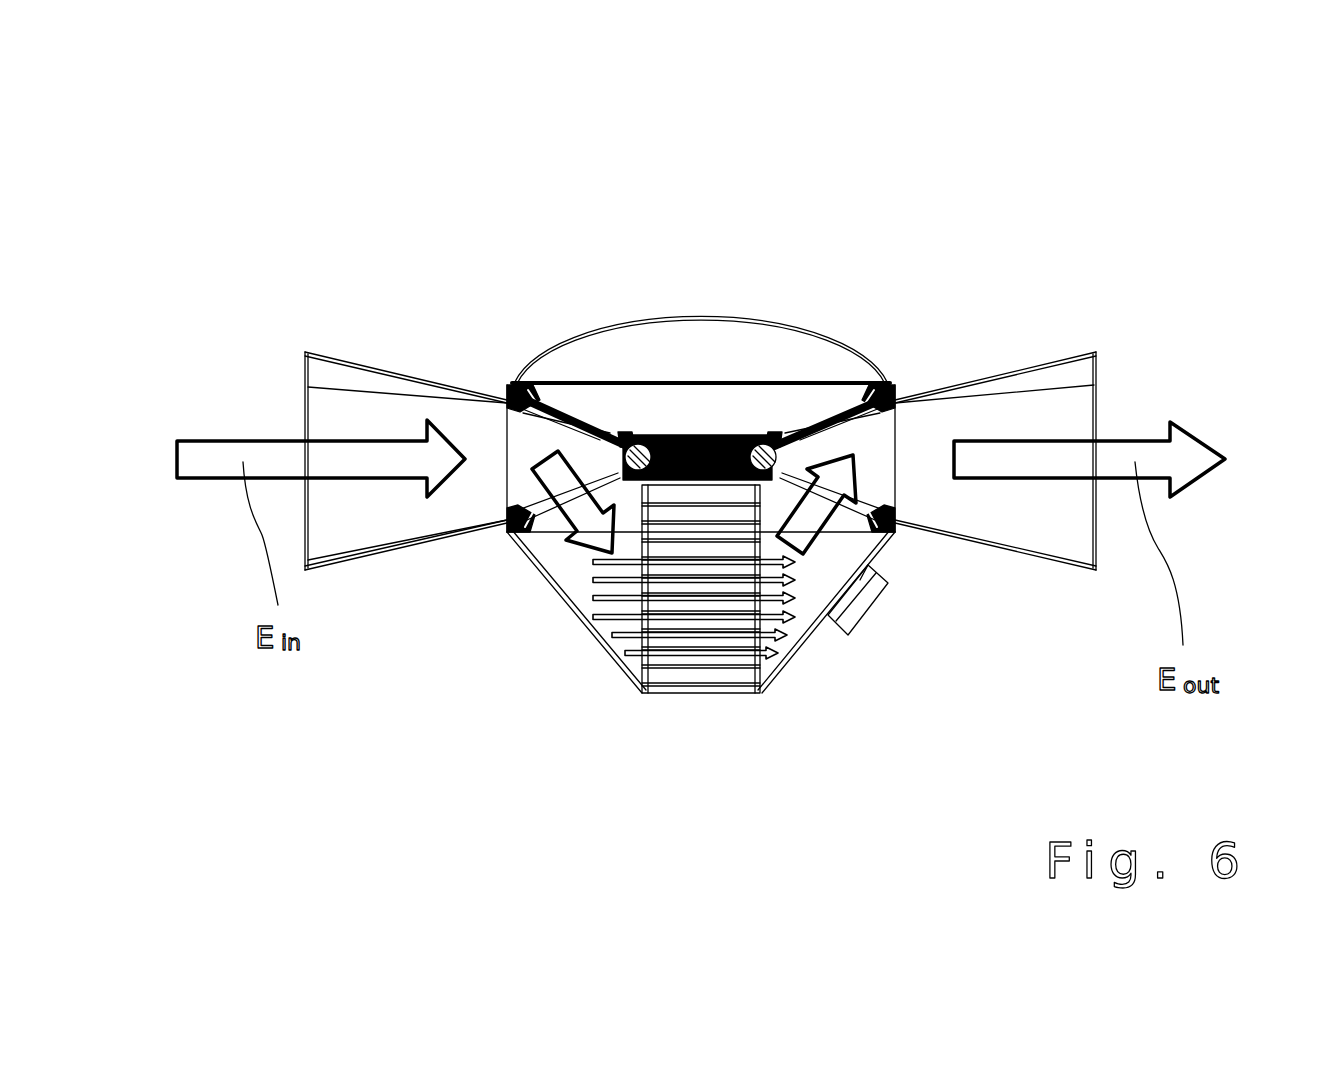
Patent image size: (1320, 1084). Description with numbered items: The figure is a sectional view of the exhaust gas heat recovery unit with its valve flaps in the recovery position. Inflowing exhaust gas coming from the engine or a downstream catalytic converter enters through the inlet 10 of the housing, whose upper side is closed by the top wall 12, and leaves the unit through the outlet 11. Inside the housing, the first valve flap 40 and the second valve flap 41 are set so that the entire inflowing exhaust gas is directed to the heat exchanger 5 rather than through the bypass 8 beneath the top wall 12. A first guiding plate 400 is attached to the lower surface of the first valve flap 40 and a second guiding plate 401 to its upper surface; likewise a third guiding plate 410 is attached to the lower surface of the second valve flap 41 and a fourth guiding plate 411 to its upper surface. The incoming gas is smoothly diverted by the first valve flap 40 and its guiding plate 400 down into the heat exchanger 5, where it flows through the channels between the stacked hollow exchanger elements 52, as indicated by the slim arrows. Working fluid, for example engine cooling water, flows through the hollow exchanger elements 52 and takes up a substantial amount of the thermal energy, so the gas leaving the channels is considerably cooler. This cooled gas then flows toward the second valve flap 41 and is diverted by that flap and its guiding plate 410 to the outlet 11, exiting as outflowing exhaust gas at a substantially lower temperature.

The heat exchanger 5 is at (822, 662).
The bypass 8 is at (699, 353).
The inlet 10 is at (333, 352).
The outlet 11 is at (1062, 358).
The top wall 12 is at (815, 332).
The first valve flap 40 is at (572, 406).
The first guiding plate 400 is at (590, 455).
The second guiding plate 401 is at (623, 437).
The second valve flap 41 is at (852, 417).
The third guiding plate 410 is at (800, 445).
The fourth guiding plate 411 is at (785, 433).
The exchanger elements 52 is at (640, 667).